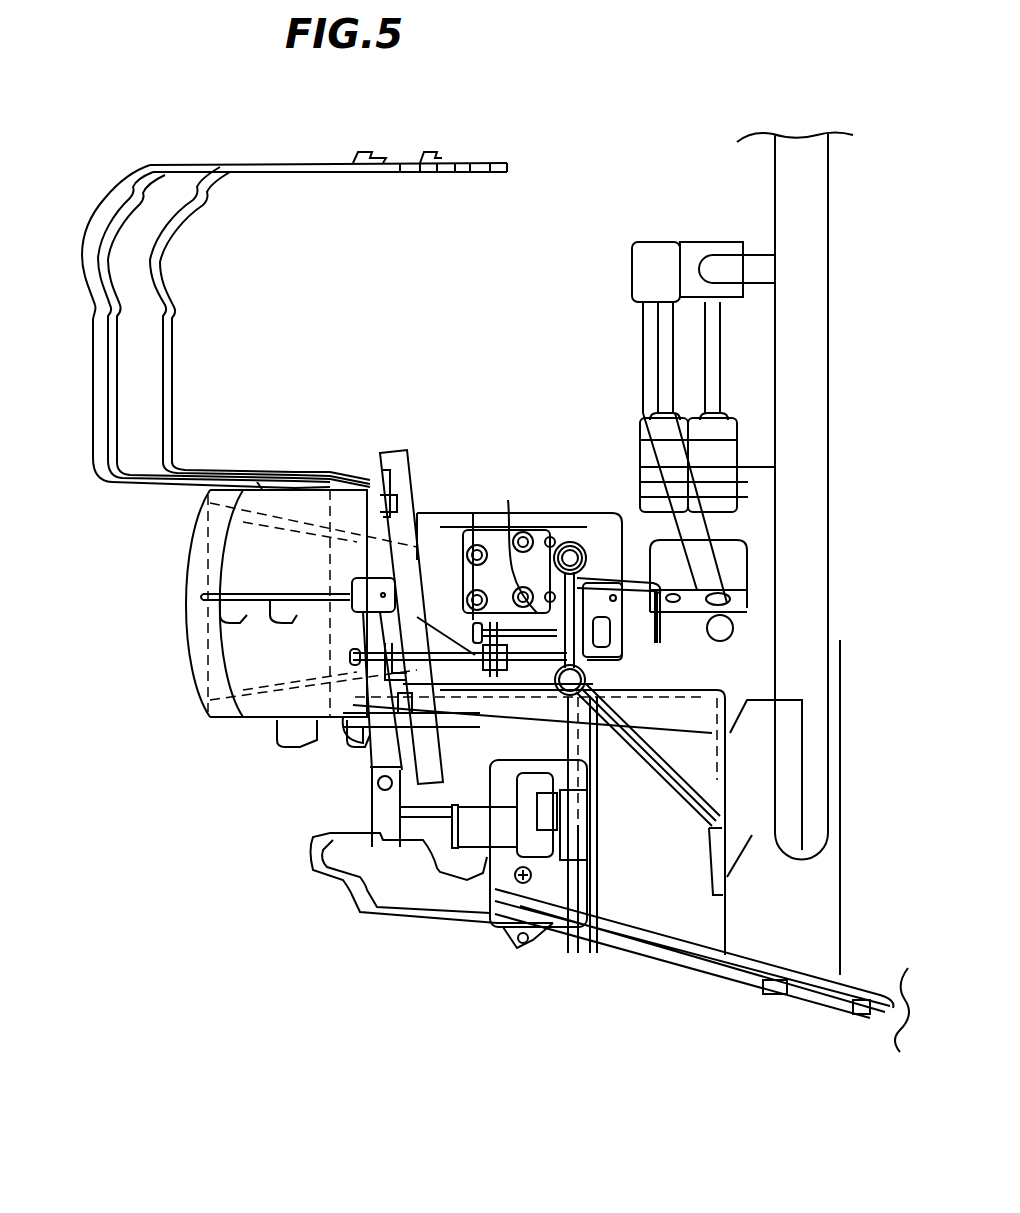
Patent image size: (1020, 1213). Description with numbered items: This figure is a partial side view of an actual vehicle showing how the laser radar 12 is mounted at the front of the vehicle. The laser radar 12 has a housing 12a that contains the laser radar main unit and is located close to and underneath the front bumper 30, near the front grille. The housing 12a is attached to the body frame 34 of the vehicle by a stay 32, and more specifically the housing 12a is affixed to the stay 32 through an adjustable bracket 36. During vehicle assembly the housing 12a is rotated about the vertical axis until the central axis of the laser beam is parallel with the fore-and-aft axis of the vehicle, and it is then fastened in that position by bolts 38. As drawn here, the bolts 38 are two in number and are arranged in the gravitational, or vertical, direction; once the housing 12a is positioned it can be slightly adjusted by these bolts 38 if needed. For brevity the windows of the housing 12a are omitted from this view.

The front bumper 30 is at (87, 400).
The laser radar 12 is at (527, 505).
The housing 12a is at (437, 552).
The bolts 38 is at (508, 500).
The adjustable bracket 36 is at (597, 683).
The stay 32 is at (637, 710).
The body frame 34 is at (752, 817).